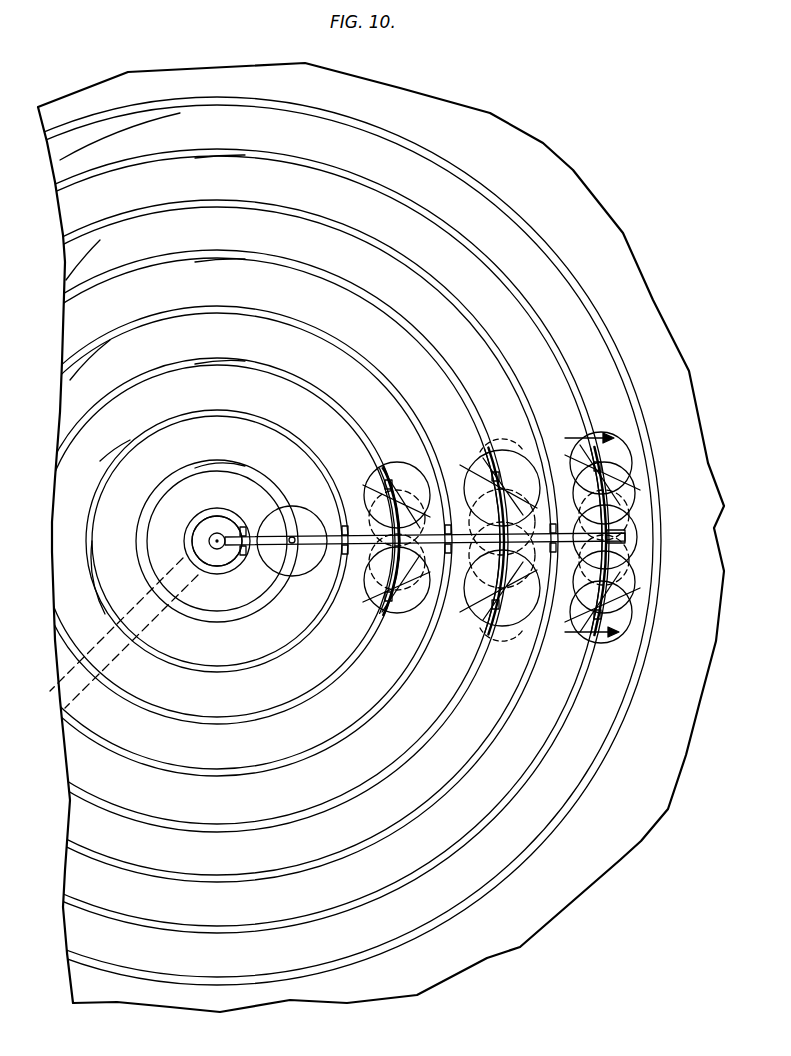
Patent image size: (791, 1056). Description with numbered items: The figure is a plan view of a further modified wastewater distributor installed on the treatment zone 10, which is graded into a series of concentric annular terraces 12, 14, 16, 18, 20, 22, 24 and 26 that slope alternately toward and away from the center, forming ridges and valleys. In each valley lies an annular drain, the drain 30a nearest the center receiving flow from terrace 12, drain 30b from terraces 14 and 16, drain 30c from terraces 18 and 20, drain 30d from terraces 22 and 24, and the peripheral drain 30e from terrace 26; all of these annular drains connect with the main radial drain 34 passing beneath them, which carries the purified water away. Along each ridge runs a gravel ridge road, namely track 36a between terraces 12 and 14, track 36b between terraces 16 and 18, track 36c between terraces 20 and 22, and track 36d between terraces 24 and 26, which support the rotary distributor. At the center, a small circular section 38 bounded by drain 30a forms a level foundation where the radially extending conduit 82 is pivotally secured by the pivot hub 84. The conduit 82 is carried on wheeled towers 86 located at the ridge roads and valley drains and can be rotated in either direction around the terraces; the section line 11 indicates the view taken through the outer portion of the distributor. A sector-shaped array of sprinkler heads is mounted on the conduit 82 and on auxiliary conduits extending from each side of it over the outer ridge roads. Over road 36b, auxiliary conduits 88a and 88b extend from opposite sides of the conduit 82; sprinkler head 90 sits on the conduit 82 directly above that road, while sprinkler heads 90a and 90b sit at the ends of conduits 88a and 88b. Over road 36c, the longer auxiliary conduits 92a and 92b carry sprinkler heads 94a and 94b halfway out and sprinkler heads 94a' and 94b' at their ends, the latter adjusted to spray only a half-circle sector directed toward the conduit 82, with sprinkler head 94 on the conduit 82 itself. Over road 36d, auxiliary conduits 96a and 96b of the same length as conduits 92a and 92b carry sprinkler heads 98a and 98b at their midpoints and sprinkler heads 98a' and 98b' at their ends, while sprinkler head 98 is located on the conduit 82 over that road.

The treatment zone 10 is at (546, 230).
The section line 11 is at (580, 536).
The terrace 12 is at (217, 541).
The terrace 14 is at (217, 541).
The terrace 16 is at (217, 541).
The terrace 18 is at (226, 541).
The terrace 20 is at (254, 541).
The terrace 22 is at (279, 541).
The terrace 24 is at (304, 541).
The terrace 26 is at (330, 541).
The drain 30a is at (208, 518).
The drain 30b is at (140, 440).
The drain 30c is at (96, 336).
The drain 30d is at (88, 236).
The drain 30e is at (140, 112).
The main radial drain 34 is at (113, 681).
The ridge road 36a is at (234, 466).
The ridge road 36b is at (233, 362).
The ridge road 36c is at (236, 260).
The ridge road 36d is at (240, 156).
The circular section 38 is at (197, 543).
The radially extending conduit 82 is at (300, 528).
The pivot hub 84 is at (222, 533).
The wheeled towers 86 is at (244, 556).
The auxiliary conduit 88a is at (404, 480).
The auxiliary conduit 88b is at (404, 606).
The sprinkler head 90 is at (378, 490).
The sprinkler head 90a is at (393, 468).
The sprinkler head 90b is at (377, 598).
The auxiliary conduit 92a is at (507, 470).
The auxiliary conduit 92b is at (507, 608).
The sprinkler head 94 is at (486, 605).
The sprinkler head 94a is at (490, 475).
The sprinkler head 94a' is at (502, 422).
The sprinkler head 94b is at (489, 608).
The sprinkler head 94b' is at (502, 660).
The auxiliary conduit 96a is at (616, 476).
The auxiliary conduit 96b is at (612, 590).
The sprinkler head 98 is at (622, 541).
The sprinkler head 98a is at (635, 510).
The sprinkler head 98a' is at (629, 457).
The sprinkler head 98b is at (635, 560).
The sprinkler head 98b' is at (629, 612).